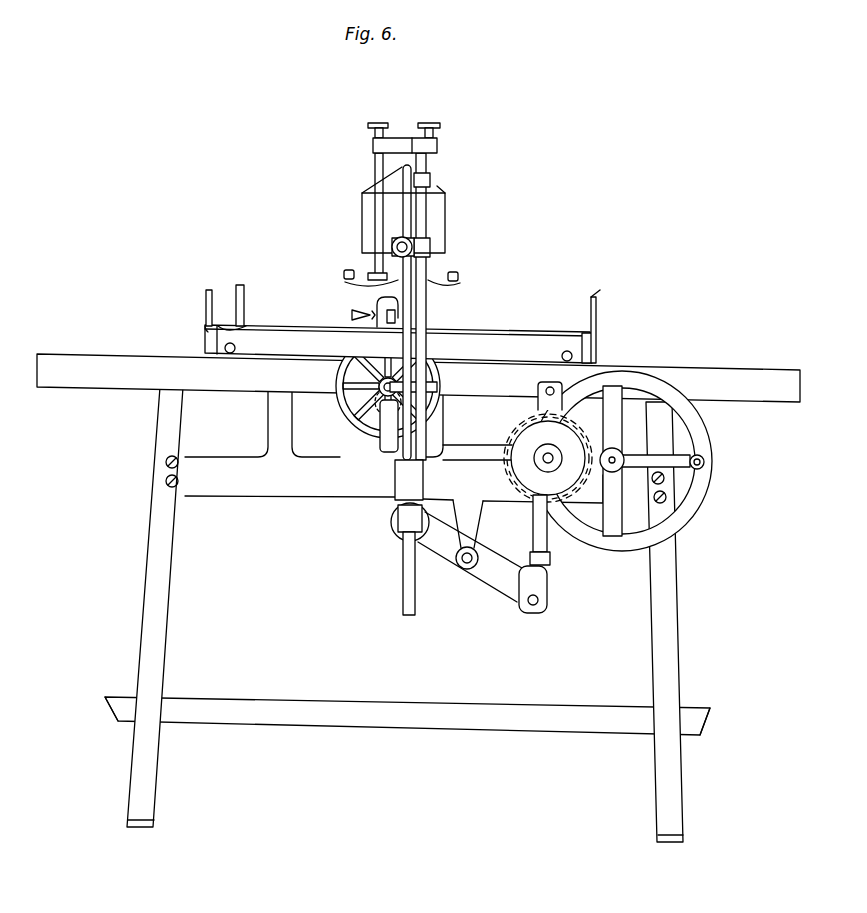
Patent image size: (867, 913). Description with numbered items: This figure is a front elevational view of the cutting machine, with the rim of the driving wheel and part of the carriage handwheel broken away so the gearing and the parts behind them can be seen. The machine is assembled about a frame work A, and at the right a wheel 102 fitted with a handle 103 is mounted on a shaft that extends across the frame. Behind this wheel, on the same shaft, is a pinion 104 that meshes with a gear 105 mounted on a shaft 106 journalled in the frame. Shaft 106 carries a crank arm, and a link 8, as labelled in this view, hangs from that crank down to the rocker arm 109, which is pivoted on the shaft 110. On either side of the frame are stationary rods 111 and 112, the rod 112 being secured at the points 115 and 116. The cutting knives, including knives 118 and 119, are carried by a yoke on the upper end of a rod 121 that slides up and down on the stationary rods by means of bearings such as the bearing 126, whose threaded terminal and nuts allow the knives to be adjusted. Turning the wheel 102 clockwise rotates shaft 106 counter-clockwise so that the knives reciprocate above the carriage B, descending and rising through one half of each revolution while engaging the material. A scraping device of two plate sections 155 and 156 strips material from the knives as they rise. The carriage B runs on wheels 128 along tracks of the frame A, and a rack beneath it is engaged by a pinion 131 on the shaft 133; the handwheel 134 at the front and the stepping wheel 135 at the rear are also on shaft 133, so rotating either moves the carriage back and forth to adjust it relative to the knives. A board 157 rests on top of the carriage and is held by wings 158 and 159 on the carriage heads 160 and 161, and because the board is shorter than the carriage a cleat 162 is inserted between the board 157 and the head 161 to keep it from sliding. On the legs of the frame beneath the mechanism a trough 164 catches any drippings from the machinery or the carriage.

The connecting rod 8 is at (532, 518).
The wheel 102 is at (698, 486).
The handle 103 is at (703, 458).
The pinion 104 is at (624, 441).
The gear 105 is at (512, 424).
The shaft 106 is at (545, 459).
The rocker arm 109 is at (500, 600).
The shaft 110 is at (465, 569).
The rod 111 is at (428, 342).
The rod 112 is at (430, 297).
The point 115 is at (404, 480).
The point 116 is at (428, 384).
The cutting knife 118 is at (440, 224).
The cutting knife 119 is at (366, 222).
The rod 121 is at (392, 292).
The bearing 126 is at (400, 524).
The wheels 128 is at (229, 358).
The pinion 131 is at (376, 406).
The shaft 133 is at (378, 385).
The handwheel 134 is at (368, 386).
The stepping wheel 135 is at (343, 410).
The plate section 155 is at (458, 277).
The plate section 156 is at (343, 274).
The board 157 is at (512, 330).
The wing 158 is at (592, 338).
The wing 159 is at (211, 341).
The head 160 is at (612, 322).
The head 161 is at (206, 300).
The cleat 162 is at (230, 322).
The trough 164 is at (372, 695).
The frame work A is at (152, 467).
The carriage B is at (418, 297).